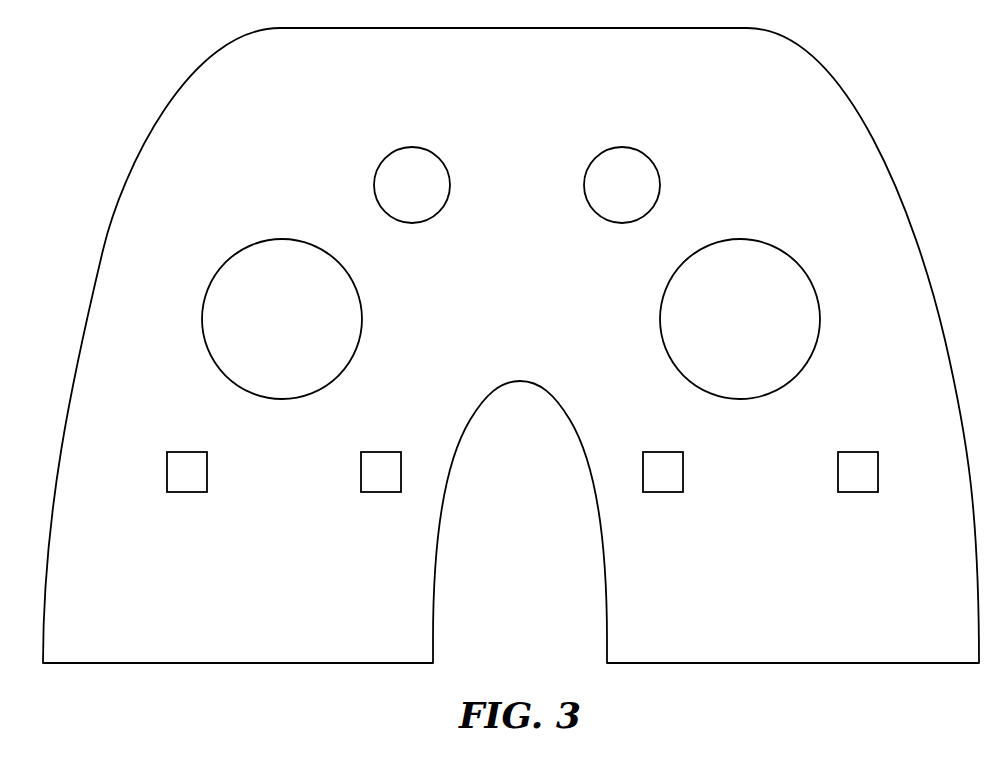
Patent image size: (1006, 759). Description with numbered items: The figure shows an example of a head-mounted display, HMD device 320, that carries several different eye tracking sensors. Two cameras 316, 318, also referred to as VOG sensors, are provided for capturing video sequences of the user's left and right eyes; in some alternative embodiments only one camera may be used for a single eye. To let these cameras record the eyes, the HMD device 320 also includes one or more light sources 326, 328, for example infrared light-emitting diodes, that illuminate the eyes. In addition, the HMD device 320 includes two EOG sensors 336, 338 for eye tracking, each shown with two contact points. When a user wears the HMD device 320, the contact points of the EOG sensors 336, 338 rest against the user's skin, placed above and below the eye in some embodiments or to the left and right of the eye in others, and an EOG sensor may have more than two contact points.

The HMD device 320 is at (900, 57).
The camera 316 is at (282, 319).
The camera 318 is at (740, 319).
The light source 326 is at (412, 185).
The light source 328 is at (622, 185).
The EOG sensor 336 is at (284, 520).
The EOG sensor 338 is at (760, 520).